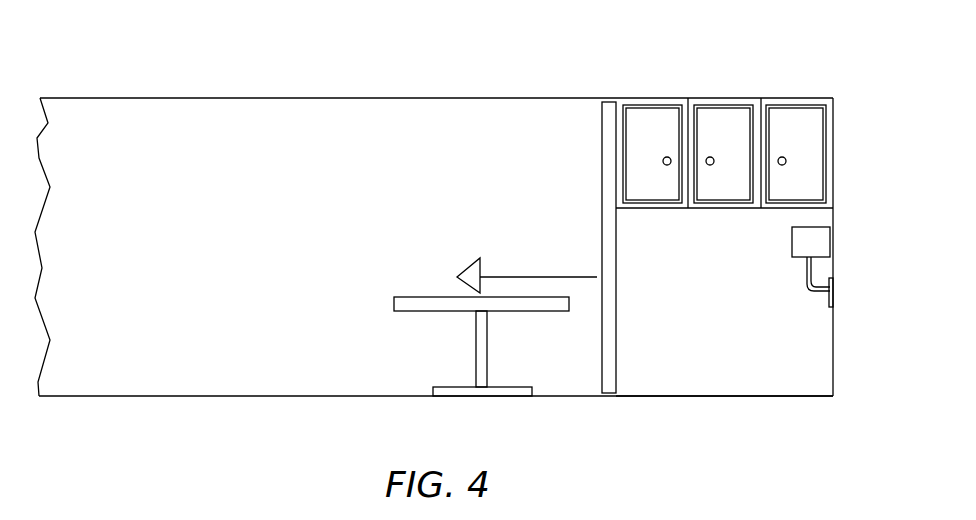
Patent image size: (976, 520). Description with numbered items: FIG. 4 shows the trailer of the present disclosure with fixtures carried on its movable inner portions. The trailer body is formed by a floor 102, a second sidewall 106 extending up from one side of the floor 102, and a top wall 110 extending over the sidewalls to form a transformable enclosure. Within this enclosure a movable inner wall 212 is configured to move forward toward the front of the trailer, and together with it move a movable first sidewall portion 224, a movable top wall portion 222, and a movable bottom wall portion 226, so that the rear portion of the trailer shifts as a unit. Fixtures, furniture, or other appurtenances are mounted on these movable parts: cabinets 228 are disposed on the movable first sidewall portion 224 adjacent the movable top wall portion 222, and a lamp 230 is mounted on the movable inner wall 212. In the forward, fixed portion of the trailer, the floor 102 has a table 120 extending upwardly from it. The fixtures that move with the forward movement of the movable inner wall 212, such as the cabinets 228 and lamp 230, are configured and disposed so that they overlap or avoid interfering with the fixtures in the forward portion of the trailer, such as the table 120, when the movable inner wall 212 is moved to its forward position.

The top wall 110 is at (228, 98).
The second sidewall 106 is at (312, 132).
The floor 102 is at (198, 396).
The movable inner wall 212 is at (853, 327).
The movable bottom wall portion 226 is at (683, 397).
The table 120 is at (480, 359).
The movable top wall portion 222 is at (640, 108).
The cabinets 228 is at (715, 123).
The lamp 230 is at (813, 242).
The movable first sidewall portion 224 is at (727, 343).